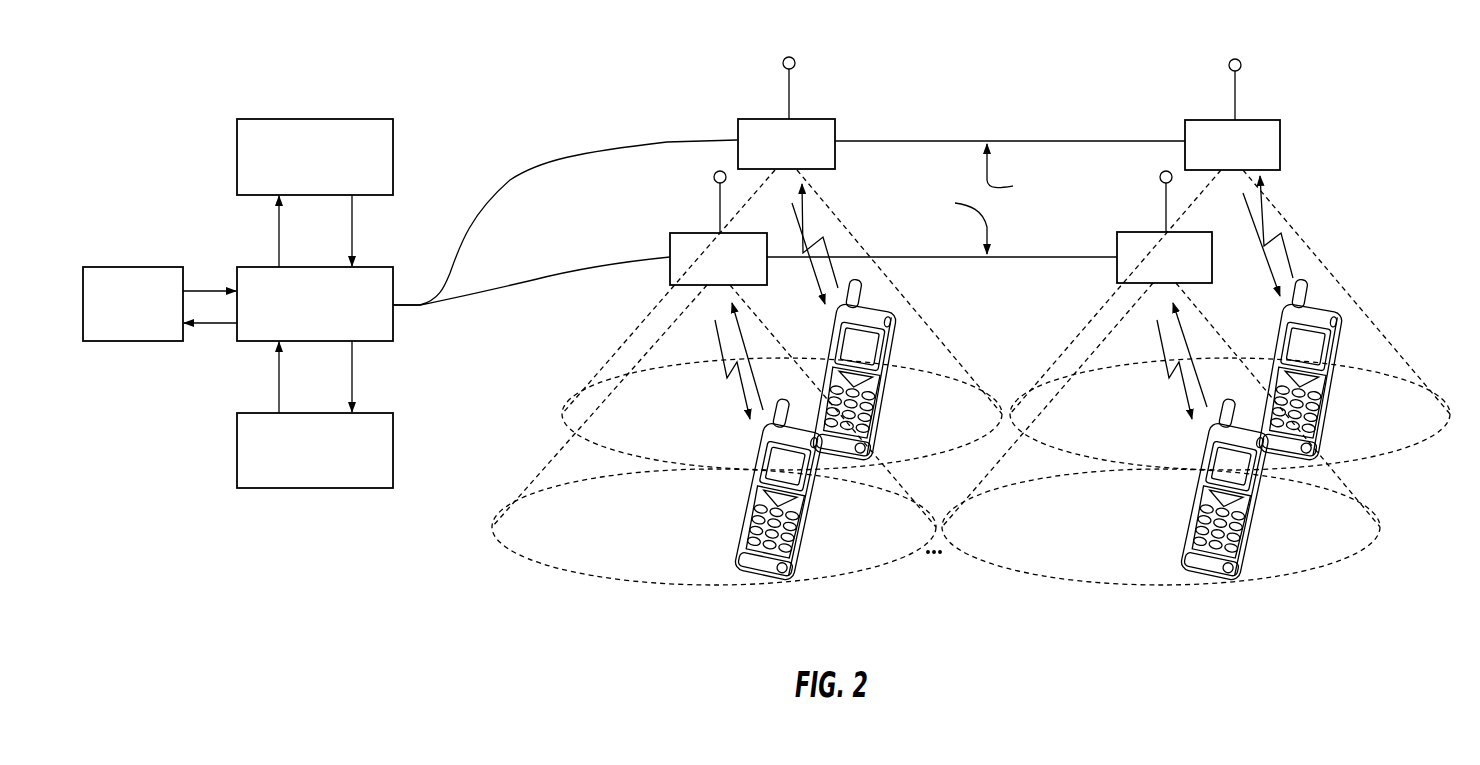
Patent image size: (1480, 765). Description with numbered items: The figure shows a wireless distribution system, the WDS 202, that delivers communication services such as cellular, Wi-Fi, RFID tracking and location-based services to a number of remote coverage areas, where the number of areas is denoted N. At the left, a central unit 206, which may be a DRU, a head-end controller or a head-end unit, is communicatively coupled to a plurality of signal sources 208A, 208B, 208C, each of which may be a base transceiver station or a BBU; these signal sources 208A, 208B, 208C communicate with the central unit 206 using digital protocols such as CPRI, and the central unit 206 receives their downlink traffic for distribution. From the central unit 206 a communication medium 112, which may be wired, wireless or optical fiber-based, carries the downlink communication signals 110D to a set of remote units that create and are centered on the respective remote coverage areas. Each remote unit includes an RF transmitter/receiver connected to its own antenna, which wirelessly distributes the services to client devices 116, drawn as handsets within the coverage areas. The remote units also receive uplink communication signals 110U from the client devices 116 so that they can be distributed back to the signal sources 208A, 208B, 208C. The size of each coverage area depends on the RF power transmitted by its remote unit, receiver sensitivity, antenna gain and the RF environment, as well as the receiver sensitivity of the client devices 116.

The WDS 202 is at (947, 111).
The central unit 206 is at (330, 324).
The signal source 208A is at (337, 470).
The signal source 208B is at (150, 324).
The signal source 208C is at (337, 174).
The communication medium 112 is at (548, 166).
The downlink communication signals 110D is at (477, 188).
The uplink communication signals 110U is at (738, 325).
The client devices 116 is at (897, 343).